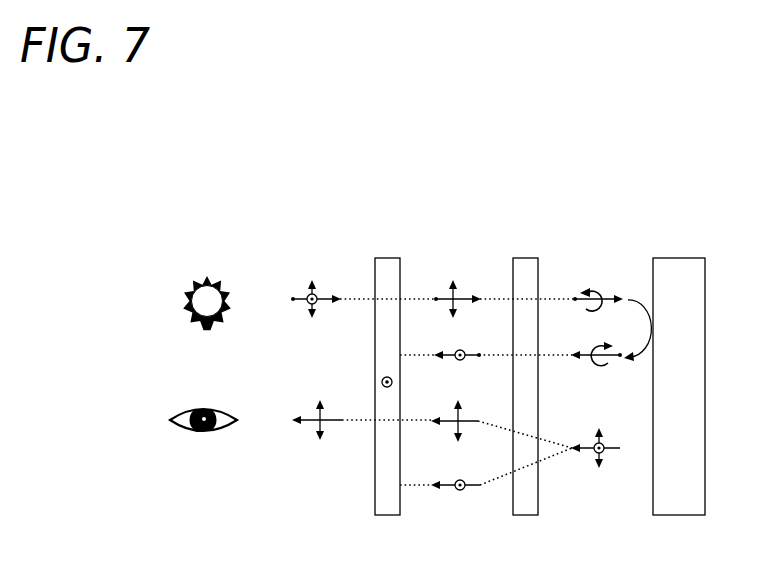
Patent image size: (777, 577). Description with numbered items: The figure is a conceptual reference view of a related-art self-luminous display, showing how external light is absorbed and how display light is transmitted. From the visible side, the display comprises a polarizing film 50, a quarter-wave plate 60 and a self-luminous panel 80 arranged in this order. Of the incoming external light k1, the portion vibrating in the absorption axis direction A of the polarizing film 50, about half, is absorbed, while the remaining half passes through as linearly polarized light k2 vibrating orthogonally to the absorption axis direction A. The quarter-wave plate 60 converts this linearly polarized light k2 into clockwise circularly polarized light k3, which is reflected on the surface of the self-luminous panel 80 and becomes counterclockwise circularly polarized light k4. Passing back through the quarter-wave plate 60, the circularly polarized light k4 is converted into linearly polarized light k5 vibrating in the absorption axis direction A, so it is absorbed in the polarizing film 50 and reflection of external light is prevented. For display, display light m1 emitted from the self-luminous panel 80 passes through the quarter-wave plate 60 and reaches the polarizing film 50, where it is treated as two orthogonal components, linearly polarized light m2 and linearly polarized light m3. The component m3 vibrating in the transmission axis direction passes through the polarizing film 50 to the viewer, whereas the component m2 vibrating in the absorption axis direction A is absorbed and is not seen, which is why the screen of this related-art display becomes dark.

The polarizing film 50 is at (387, 272).
The λ/4 plate 60 is at (524, 270).
The self-luminous panel 80 is at (680, 282).
The external light k1 is at (329, 292).
The linearly polarized light k2 is at (466, 296).
The clockwise circularly polarized light k3 is at (610, 296).
The counterclockwise circularly polarized light k4 is at (588, 360).
The linearly polarized light k5 is at (451, 350).
The absorption axis direction A is at (381, 378).
The display light m1 is at (585, 451).
The linearly polarized light m2 is at (450, 489).
The linearly polarized light m3 is at (306, 423).